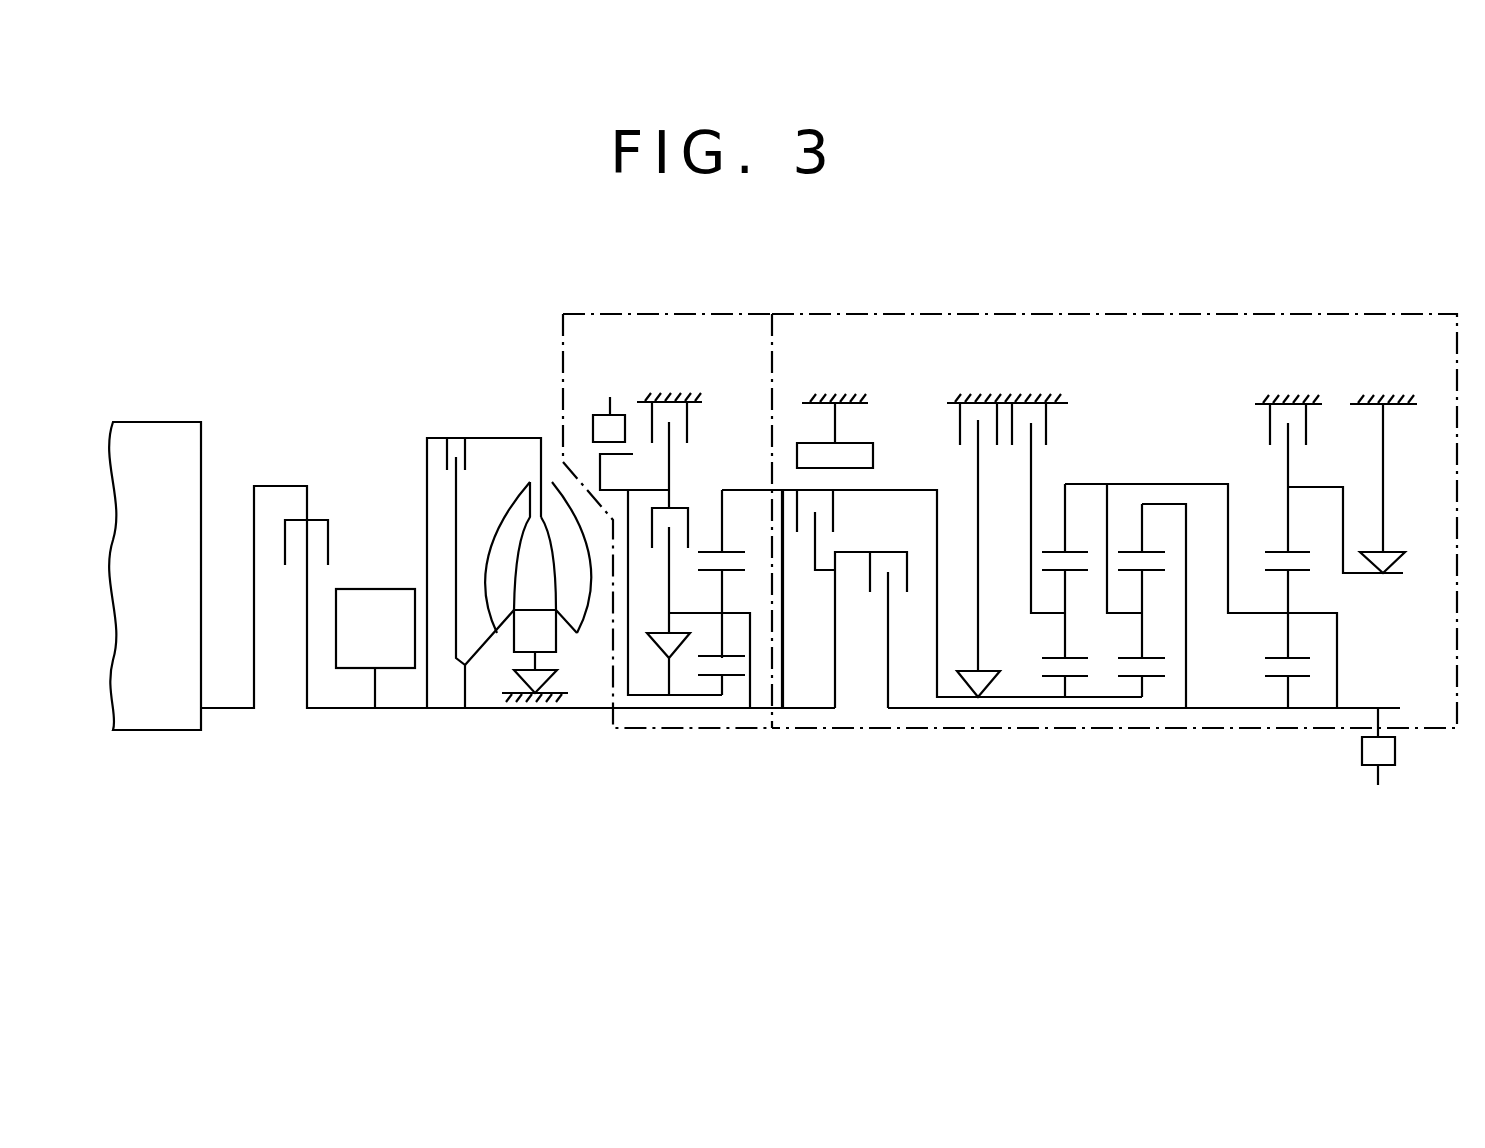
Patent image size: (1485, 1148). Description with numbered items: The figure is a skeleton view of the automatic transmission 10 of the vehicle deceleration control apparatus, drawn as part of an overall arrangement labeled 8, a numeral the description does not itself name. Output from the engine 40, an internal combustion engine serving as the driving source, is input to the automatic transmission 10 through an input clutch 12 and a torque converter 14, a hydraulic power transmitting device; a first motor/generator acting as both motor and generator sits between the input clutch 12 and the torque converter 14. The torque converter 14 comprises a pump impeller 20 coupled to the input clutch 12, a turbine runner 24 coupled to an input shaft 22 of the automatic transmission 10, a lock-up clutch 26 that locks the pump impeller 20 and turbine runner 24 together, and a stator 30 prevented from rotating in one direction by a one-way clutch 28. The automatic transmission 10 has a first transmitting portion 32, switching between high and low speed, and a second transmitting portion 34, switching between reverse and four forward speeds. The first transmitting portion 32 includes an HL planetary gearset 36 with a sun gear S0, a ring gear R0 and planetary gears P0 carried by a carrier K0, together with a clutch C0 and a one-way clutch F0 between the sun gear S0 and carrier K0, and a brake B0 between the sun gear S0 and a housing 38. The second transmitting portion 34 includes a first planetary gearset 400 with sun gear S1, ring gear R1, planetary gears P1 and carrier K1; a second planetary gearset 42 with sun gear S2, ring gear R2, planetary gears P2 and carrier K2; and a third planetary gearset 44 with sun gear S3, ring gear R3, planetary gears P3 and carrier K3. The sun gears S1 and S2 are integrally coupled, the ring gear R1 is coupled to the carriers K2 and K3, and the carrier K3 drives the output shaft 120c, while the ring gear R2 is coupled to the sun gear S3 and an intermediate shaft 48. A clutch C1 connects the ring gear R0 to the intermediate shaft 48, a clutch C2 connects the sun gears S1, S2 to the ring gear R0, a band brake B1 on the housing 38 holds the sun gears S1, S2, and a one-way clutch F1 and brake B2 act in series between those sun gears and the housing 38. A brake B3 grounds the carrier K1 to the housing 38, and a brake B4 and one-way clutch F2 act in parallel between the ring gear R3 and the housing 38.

The vehicular drive system 8 is at (1302, 222).
The automatic transmission 10 is at (1132, 266).
The input clutch 12 is at (328, 540).
The torque converter 14 is at (463, 370).
The pump impeller 20 is at (552, 482).
The input shaft 22 is at (503, 708).
The turbine runner 24 is at (503, 520).
The lock-up clutch 26 is at (428, 446).
The one-way clutch 28 is at (548, 708).
The stator 30 is at (522, 638).
The first transmitting portion 32 is at (670, 312).
The second transmitting portion 34 is at (1000, 312).
The HL planetary gearset 36 is at (738, 665).
The housing 38 is at (670, 400).
The engine 40 is at (162, 426).
The second planetary gearset 42 is at (1167, 659).
The third planetary gearset 44 is at (1301, 628).
The intermediate shaft 48 is at (900, 708).
The first planetary gearset 400 is at (1163, 659).
The output shaft 120c is at (1382, 708).
The brake B0 is at (688, 423).
The clutch C0 is at (690, 530).
The ring gear R0 is at (736, 551).
The planetary gears P0 is at (740, 573).
The sun gear S0 is at (730, 677).
The carrier K0 is at (730, 616).
The one-way clutch F0 is at (662, 648).
The band brake B1 is at (873, 455).
The brake B2 is at (960, 425).
The brake B3 is at (1048, 420).
The brake B4 is at (1270, 430).
The clutch C1 is at (907, 580).
The clutch C2 is at (833, 512).
The carrier K1 is at (1030, 565).
The carrier K2 is at (1128, 607).
The carrier K3 is at (1286, 572).
The planetary gears P1 is at (1045, 648).
The planetary gears P2 is at (1155, 640).
The planetary gears P3 is at (1267, 656).
The ring gear R1 is at (1050, 548).
The ring gear R2 is at (1128, 548).
The ring gear R3 is at (1322, 498).
The sun gear S1 is at (1050, 677).
The sun gear S2 is at (1148, 677).
The sun gear S3 is at (1277, 680).
The one-way clutch F1 is at (967, 697).
The one-way clutch F2 is at (1395, 578).